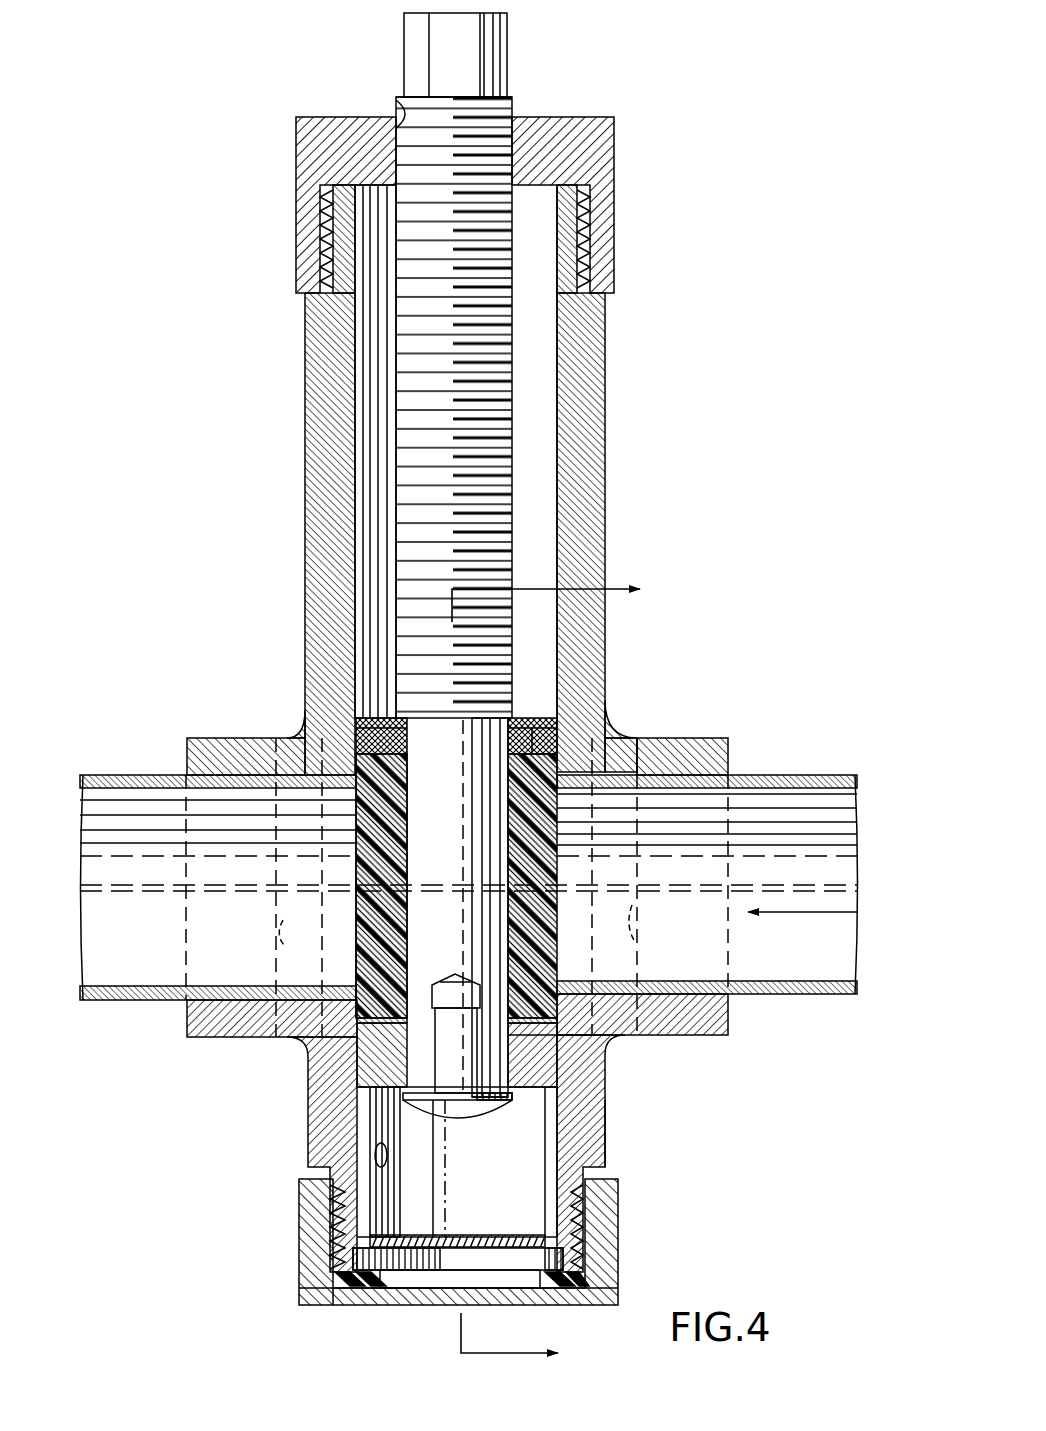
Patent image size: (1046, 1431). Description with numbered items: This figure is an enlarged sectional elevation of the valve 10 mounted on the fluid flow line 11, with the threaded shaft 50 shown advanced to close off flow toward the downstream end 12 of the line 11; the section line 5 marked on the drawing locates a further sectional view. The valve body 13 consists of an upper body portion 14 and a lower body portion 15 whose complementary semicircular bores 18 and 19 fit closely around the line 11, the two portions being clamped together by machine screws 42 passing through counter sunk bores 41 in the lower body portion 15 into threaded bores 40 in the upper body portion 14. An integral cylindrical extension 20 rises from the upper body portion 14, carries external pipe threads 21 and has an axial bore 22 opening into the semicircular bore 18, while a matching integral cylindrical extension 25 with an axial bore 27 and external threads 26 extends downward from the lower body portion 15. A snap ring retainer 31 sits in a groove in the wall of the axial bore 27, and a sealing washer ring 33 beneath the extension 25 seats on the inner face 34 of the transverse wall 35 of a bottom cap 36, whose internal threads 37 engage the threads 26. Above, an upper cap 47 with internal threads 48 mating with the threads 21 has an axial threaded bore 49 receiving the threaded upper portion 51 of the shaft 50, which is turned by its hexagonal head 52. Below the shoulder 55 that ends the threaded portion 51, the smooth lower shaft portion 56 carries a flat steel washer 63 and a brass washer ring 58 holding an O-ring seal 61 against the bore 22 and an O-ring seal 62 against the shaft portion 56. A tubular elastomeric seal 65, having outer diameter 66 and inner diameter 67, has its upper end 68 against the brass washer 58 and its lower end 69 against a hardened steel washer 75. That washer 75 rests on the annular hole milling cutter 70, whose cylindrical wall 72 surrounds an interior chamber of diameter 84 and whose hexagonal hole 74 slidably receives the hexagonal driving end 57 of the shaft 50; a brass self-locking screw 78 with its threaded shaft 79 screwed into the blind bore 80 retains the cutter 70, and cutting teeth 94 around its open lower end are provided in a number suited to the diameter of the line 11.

The valve 10 is at (435, 480).
The fluid flow line 11 is at (778, 775).
The down stream end 12 is at (140, 775).
The body 13 is at (690, 735).
The upper body portion 14 is at (712, 738).
The lower body portion 15 is at (690, 1010).
The semicircular bore 18 is at (184, 773).
The semicircular bore 19 is at (208, 1000).
The integral cylindrical extension 20 is at (312, 408).
The external standard pipe threads 21 is at (584, 222).
The cylindrical bore 22 is at (548, 362).
The integral cylindrical extension 25 is at (606, 1122).
The external standard pipe threads 26 is at (600, 1263).
The axial bore 27 is at (590, 1160).
The snap ring retainer 31 is at (510, 1272).
The sealing washer ring 33 is at (562, 1290).
The inner face 34 is at (445, 1286).
The transverse wall 35 is at (400, 1300).
The bottom cap 36 is at (296, 1244).
The internal standard pipe threads 37 is at (336, 1215).
The threaded bores 40 is at (280, 742).
The counter sunk bores 41 is at (280, 927).
The machine screw 42 is at (290, 943).
The upper cap 47 is at (295, 153).
The internal threads 48 is at (326, 220).
The axial threaded bore 49 is at (400, 112).
The threaded shaft 50 is at (518, 92).
The threaded upper portion 51 is at (412, 303).
The hexagonal shaped head 52 is at (404, 36).
The peripheral shoulder 55 is at (462, 737).
The lower shaft portion 56 is at (437, 907).
The driving end 57 is at (577, 1072).
The brass washer 58 is at (548, 718).
The O-ring seal 61 is at (558, 746).
The O-ring seal 62 is at (410, 733).
The flat steel washer 63 is at (556, 735).
The tubular elastomeric seal 65 is at (418, 818).
The outer diameter 66 is at (360, 935).
The inner diameter 67 is at (500, 905).
The upper end 68 is at (357, 722).
The lower end 69 is at (560, 1036).
The annular hole milling cutter 70 is at (372, 1100).
The cylindrical wall 72 is at (590, 1200).
The axially disposed hole 74 is at (355, 1088).
The hardened steel washer 75 is at (365, 1030).
The brass self-locking screw 78 is at (502, 1106).
The threaded screw shaft 79 is at (460, 1120).
The threaded blind bore 80 is at (450, 984).
The diameter 84 is at (374, 1155).
The cutting teeth 94 is at (470, 1237).
The section line 5 is at (565, 977).